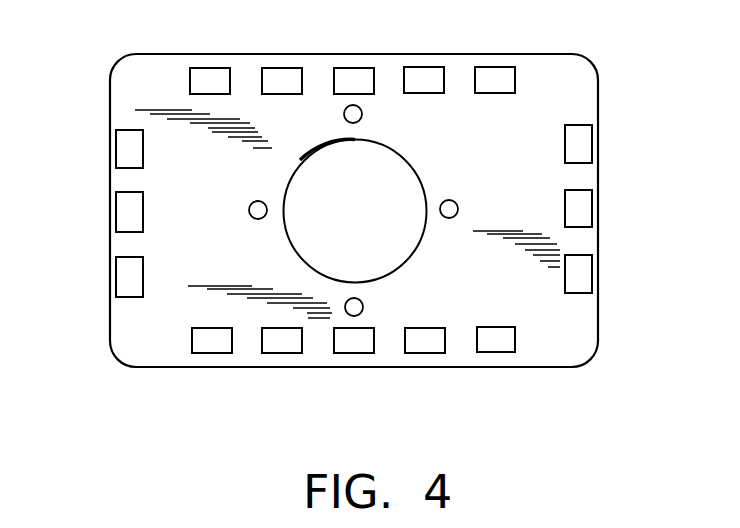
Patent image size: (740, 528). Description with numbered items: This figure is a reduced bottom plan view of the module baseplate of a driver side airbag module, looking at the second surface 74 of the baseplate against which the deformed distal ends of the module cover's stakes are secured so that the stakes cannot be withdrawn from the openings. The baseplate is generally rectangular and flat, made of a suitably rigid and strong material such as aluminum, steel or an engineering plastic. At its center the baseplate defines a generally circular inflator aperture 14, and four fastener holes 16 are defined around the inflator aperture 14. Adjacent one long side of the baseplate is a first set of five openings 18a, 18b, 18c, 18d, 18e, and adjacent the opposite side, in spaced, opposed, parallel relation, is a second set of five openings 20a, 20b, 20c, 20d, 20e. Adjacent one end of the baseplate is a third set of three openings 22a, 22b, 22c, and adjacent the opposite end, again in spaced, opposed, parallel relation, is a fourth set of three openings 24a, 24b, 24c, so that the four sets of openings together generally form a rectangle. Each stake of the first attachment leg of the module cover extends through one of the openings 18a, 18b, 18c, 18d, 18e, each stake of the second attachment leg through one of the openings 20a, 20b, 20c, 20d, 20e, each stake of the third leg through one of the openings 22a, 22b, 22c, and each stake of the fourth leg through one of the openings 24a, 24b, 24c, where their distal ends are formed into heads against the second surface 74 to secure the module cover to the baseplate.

The inflator aperture 14 is at (410, 163).
The fastener holes 16 is at (344, 117).
The opening of first set of openings 18a is at (210, 68).
The opening of first set of openings 18b is at (283, 68).
The opening of first set of openings 18c is at (355, 68).
The opening of first set of openings 18d is at (428, 67).
The opening of first set of openings 18e is at (500, 67).
The opening of second set of openings 20a is at (218, 353).
The opening of second set of openings 20b is at (285, 353).
The opening of second set of openings 20c is at (358, 353).
The opening of second set of openings 20d is at (430, 353).
The opening of second set of openings 20e is at (500, 352).
The opening of third set of openings 22a is at (116, 145).
The opening of third set of openings 22b is at (116, 210).
The opening of third set of openings 22c is at (116, 268).
The opening of fourth set of openings 24a is at (592, 137).
The opening of fourth set of openings 24b is at (592, 207).
The opening of fourth set of openings 24c is at (592, 268).
The second surface 74 is at (577, 70).